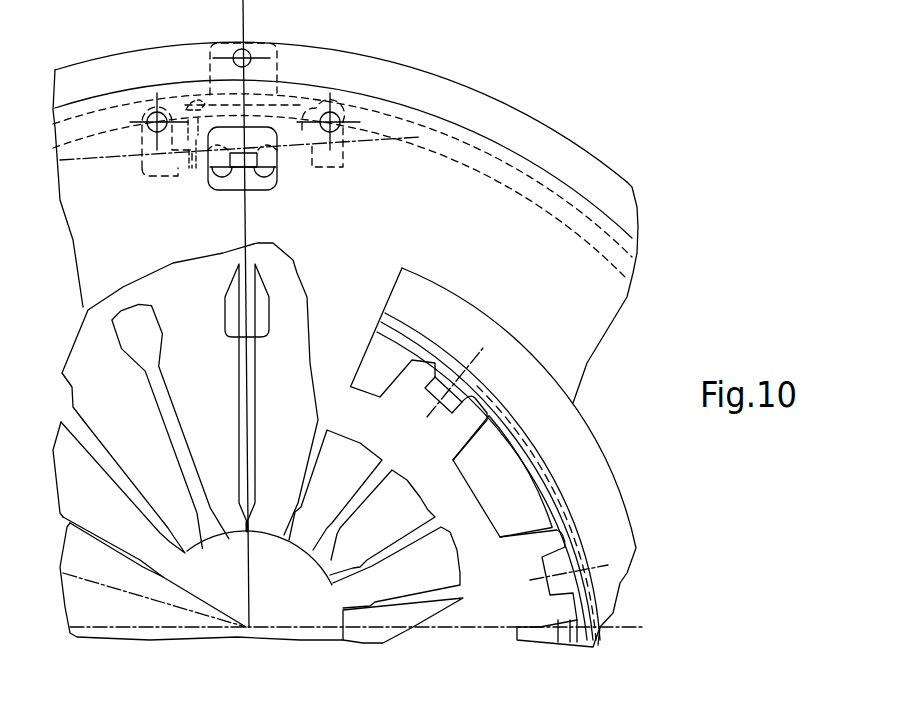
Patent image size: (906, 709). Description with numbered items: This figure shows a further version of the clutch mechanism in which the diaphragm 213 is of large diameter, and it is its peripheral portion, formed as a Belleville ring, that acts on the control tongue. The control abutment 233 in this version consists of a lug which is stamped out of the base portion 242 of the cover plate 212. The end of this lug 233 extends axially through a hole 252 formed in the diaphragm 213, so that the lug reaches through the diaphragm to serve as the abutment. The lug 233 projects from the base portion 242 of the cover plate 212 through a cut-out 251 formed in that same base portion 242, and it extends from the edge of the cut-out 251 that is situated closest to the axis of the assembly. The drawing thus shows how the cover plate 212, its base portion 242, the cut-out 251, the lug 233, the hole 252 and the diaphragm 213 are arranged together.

The cover plate 212 is at (547, 114).
The diaphragm 213 is at (212, 307).
The control abutment 233 is at (262, 168).
The base portion 242 is at (521, 263).
The cut-out 251 is at (216, 165).
The hole 252 is at (224, 172).